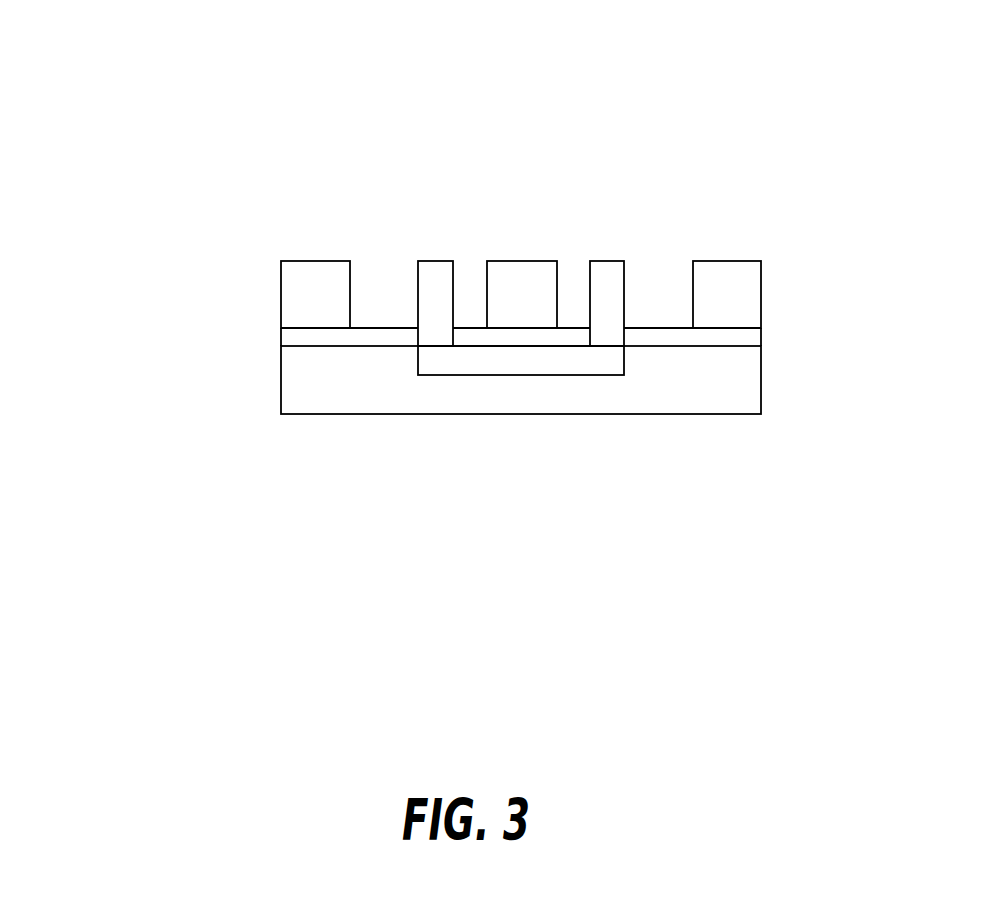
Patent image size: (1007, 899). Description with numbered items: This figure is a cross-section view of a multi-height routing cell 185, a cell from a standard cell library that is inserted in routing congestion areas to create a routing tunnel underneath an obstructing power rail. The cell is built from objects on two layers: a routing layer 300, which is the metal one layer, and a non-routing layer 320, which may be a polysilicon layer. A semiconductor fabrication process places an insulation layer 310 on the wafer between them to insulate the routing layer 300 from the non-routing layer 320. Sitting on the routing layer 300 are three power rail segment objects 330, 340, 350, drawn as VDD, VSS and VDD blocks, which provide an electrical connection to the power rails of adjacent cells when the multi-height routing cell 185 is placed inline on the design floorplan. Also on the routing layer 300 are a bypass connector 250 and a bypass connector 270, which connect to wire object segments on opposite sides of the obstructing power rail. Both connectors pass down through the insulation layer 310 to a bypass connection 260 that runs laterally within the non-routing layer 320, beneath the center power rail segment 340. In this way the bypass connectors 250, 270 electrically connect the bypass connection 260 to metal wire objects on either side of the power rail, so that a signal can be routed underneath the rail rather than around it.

The multi-height routing cell 185 is at (455, 263).
The bypass connector 250 is at (423, 261).
The bypass connection 260 is at (552, 431).
The bypass connector 270 is at (607, 261).
The routing layer 300 is at (257, 260).
The insulation layer 310 is at (257, 328).
The non-routing layer 320 is at (257, 346).
The power rail segment object 330 is at (293, 261).
The power rail segment object 340 is at (522, 261).
The power rail segment object 350 is at (745, 261).